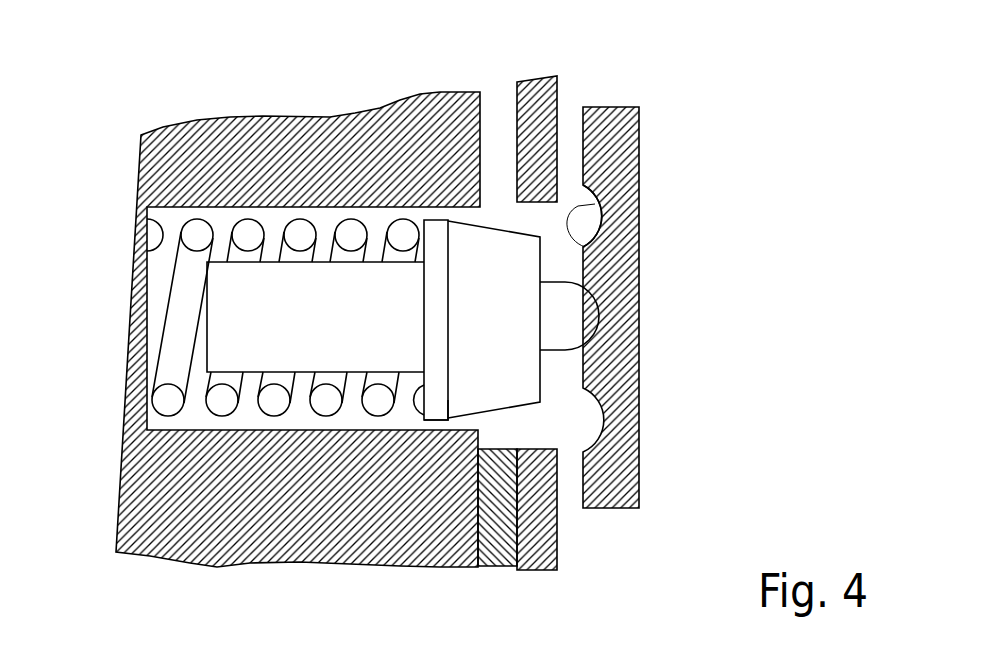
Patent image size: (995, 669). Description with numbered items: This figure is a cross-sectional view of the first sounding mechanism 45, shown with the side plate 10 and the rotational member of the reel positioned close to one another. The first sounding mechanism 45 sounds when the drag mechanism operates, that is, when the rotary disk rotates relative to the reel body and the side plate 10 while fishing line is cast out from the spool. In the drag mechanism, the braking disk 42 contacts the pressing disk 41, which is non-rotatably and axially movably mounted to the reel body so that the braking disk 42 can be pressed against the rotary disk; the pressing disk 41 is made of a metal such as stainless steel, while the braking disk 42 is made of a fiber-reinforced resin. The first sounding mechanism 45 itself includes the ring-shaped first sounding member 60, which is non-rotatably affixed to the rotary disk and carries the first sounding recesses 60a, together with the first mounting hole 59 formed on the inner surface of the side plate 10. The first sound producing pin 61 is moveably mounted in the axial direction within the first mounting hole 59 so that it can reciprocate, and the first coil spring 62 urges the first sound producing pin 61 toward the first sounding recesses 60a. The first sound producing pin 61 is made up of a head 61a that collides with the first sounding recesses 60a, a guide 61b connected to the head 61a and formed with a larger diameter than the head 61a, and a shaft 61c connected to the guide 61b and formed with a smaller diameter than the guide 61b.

The side plate 10 is at (382, 152).
The pressing disk 41 is at (492, 543).
The braking disk 42 is at (557, 545).
The first sounding mechanism 45 is at (503, 72).
The first mounting hole 59 is at (235, 232).
The first sounding member 60 is at (613, 161).
The first sounding recesses 60a is at (592, 247).
The first sound producing pin 61 is at (443, 225).
The head 61a is at (572, 325).
The guide 61b is at (456, 421).
The shaft 61c is at (225, 283).
The first coil spring 62 is at (173, 372).